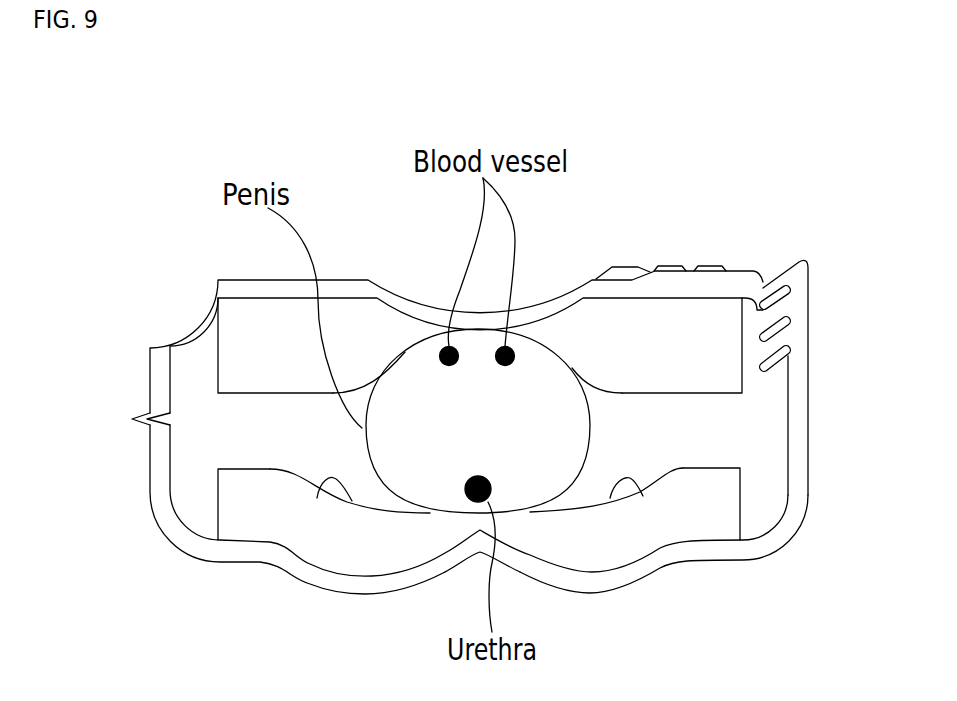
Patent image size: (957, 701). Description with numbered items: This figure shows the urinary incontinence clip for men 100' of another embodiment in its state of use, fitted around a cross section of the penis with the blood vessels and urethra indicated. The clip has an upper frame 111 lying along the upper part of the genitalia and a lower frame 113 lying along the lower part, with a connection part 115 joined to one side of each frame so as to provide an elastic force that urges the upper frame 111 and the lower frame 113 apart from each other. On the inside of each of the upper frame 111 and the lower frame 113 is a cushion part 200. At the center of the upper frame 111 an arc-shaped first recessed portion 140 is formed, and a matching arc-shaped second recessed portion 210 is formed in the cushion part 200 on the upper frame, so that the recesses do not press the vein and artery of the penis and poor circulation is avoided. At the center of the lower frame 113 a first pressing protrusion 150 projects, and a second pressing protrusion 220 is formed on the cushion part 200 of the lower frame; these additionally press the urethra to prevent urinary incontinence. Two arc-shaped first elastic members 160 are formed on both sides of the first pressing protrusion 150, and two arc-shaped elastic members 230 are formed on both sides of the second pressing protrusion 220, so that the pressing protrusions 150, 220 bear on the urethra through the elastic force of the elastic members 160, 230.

The urinary incontinence clip for men 100' is at (254, 82).
The upper frame 111 is at (213, 278).
The lower frame 113 is at (790, 527).
The connection part 115 is at (152, 452).
The first recessed portion 140 is at (547, 263).
The first pressing protrusion 150 is at (480, 556).
The first elastic member 160 is at (360, 583).
The cushion part 200 is at (220, 345).
The second recessed portion 210 is at (427, 340).
The second pressing protrusion 220 is at (503, 512).
The elastic member 230 is at (315, 502).